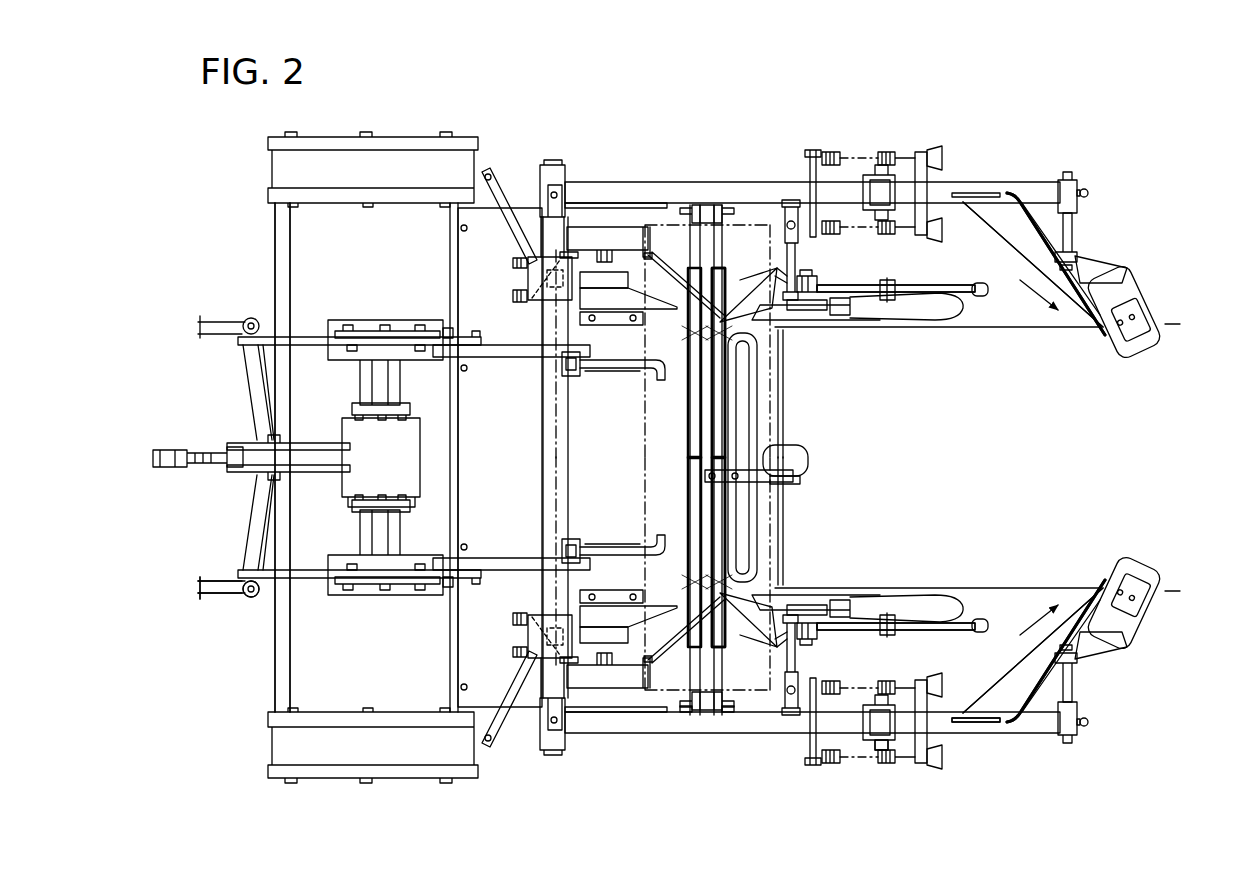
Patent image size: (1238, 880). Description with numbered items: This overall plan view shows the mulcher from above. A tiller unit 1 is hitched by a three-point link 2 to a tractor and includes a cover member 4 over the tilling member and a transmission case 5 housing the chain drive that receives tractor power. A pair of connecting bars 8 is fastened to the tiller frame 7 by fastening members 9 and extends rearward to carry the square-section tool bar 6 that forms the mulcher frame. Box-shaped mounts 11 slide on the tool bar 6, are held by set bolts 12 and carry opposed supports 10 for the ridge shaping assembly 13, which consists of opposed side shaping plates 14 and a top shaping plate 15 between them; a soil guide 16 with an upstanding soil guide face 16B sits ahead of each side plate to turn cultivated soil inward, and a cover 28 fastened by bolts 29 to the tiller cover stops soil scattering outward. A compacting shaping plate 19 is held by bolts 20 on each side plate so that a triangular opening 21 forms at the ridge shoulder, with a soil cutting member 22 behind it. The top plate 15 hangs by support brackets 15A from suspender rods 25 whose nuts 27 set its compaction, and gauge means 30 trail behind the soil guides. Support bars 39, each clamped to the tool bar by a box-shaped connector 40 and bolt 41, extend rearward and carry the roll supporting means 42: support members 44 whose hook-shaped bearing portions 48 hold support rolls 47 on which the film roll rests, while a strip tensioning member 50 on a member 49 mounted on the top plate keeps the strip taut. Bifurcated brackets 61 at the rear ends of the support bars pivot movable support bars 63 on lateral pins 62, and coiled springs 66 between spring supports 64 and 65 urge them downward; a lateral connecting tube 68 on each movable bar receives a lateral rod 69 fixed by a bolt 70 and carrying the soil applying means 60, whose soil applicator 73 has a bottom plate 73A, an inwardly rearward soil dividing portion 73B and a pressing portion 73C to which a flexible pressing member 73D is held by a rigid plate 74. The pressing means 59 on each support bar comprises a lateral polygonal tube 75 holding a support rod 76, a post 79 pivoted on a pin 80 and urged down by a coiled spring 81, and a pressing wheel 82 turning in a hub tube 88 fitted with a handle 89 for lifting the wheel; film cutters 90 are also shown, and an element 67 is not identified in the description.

The tiller unit 1 is at (262, 692).
The three-point link 2 is at (210, 598).
The cover member 4 is at (298, 630).
The transmission case 5 is at (415, 462).
The tool bar 6 is at (543, 470).
The tiller frame 7 is at (405, 335).
The connecting bars 8 is at (545, 357).
The fastening members 9 is at (452, 340).
The supports 10 is at (513, 273).
The box-shaped mounts 11 is at (540, 302).
The set bolts 12 is at (513, 296).
The ridge shaping assembly 13 is at (576, 438).
The side shaping plates 14 is at (585, 288).
The top shaping plate 15 is at (558, 497).
The support brackets 15A is at (612, 368).
The soil guide 16 is at (505, 197).
The soil guide face 16B is at (486, 170).
The compacting shaping plate 19 is at (672, 322).
The bolts 20 is at (633, 322).
The triangular opening 21 is at (683, 278).
The soil cutting member 22 is at (745, 300).
The suspender rods 25 is at (600, 378).
The nuts 27 is at (574, 376).
The cover 28 is at (453, 505).
The bolts 29 is at (468, 368).
The gauge means 30 is at (632, 230).
The support bars 39 is at (632, 183).
The box-shaped connector 40 is at (556, 172).
The bolt 41 is at (554, 228).
The roll supporting means 42 is at (724, 210).
The support members 44 is at (706, 208).
The support rolls 47 is at (718, 428).
The bearing portions 48 is at (695, 718).
The member 49 is at (775, 482).
The strip tensioning member 50 is at (790, 445).
The pressing means 59 is at (932, 352).
The soil applying means 60 is at (1118, 220).
The bifurcated brackets 61 is at (886, 176).
The lateral pins 62 is at (880, 750).
The movable support bars 63 is at (955, 190).
The spring supports 64 is at (813, 150).
The spring supports 65 is at (922, 150).
The coiled springs 66 is at (845, 158).
The wing nut 67 is at (935, 155).
The lateral connecting tube 68 is at (1077, 182).
The lateral rod 69 is at (1072, 231).
The bolt 70 is at (1090, 193).
The soil applicator 73 is at (1130, 265).
The bottom plate 73A is at (1014, 262).
The soil dividing portion 73B is at (1033, 240).
The pressing portion 73C is at (1130, 280).
The flexible pressing member 73D is at (1142, 358).
The rigid plate 74 is at (1144, 326).
The lateral polygonal tube 75 is at (786, 215).
The support rod 76 is at (775, 272).
The post 79 is at (850, 286).
The pin 80 is at (812, 288).
The coiled spring 81 is at (807, 322).
The pressing wheel 82 is at (922, 322).
The hub tube 88 is at (888, 280).
The handle 89 is at (972, 286).
The film cutters 90 is at (978, 736).